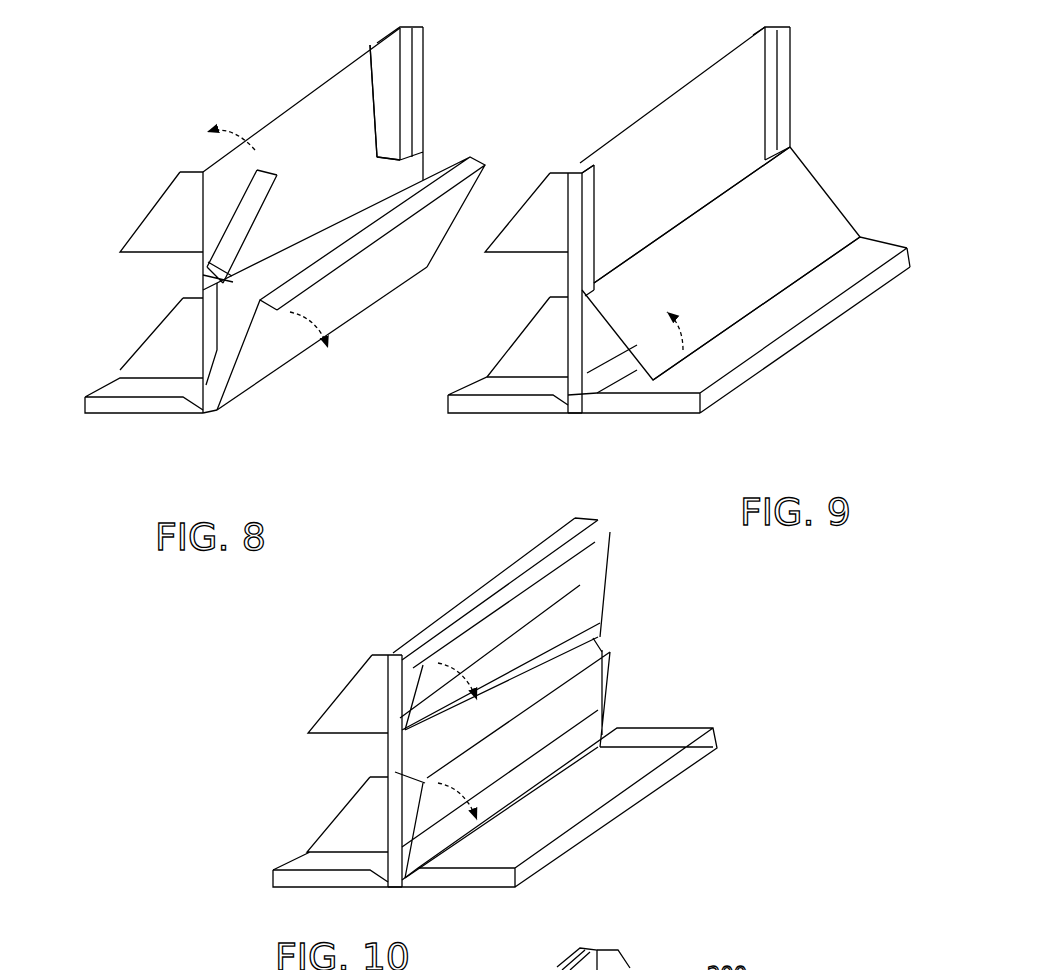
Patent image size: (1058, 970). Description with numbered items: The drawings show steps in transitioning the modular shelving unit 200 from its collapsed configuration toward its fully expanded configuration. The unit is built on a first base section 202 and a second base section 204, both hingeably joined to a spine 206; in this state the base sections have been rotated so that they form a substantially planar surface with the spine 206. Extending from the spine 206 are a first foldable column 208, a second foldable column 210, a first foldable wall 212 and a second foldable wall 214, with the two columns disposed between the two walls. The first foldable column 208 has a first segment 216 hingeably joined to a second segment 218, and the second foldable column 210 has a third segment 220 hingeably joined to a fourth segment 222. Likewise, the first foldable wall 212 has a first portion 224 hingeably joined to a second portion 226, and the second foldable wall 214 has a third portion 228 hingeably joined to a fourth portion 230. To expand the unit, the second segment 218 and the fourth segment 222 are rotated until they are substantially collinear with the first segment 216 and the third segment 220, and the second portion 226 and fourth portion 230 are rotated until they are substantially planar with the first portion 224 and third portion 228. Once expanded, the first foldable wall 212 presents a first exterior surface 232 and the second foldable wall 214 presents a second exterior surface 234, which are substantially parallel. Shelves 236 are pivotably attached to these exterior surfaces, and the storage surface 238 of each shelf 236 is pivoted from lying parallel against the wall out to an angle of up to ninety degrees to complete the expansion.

In FIG. 8, the modular shelving unit 200 is at (285, 240).
In FIG. 9, the modular shelving unit 200 is at (686, 240).
In FIG. 10, the modular shelving unit 200 is at (441, 728).
In FIG. 8, the first base section 202 is at (255, 347).
In FIG. 9, the first base section 202 is at (805, 343).
In FIG. 10, the first base section 202 is at (550, 863).
In FIG. 8, the second base section 204 is at (153, 412).
In FIG. 9, the second base section 204 is at (498, 415).
In FIG. 10, the second base section 204 is at (290, 890).
In FIG. 8, the spine 206 is at (207, 415).
In FIG. 9, the spine 206 is at (573, 413).
In FIG. 10, the spine 206 is at (395, 888).
In FIG. 8, the first foldable column 208 is at (198, 282).
In FIG. 9, the first foldable column 208 is at (558, 272).
In FIG. 10, the first foldable column 208 is at (378, 762).
In FIG. 8, the second foldable column 210 is at (436, 93).
In FIG. 9, the second foldable column 210 is at (823, 80).
In FIG. 9, the first foldable wall 212 is at (756, 236).
In FIG. 9, the second foldable wall 214 is at (650, 105).
In FIG. 8, the first segment 216 is at (215, 347).
In FIG. 9, the first segment 216 is at (573, 347).
In FIG. 8, the second segment 218 is at (277, 173).
In FIG. 9, the second segment 218 is at (588, 210).
In FIG. 8, the third segment 220 is at (368, 40).
In FIG. 8, the fourth segment 222 is at (415, 65).
In FIG. 9, the fourth segment 222 is at (783, 107).
In FIG. 9, the first portion 224 is at (610, 373).
In FIG. 8, the second portion 226 is at (322, 238).
In FIG. 9, the second portion 226 is at (792, 208).
In FIG. 9, the third portion 228 is at (570, 393).
In FIG. 8, the fourth portion 230 is at (335, 118).
In FIG. 9, the fourth portion 230 is at (708, 100).
In FIG. 10, the first exterior surface 232 is at (532, 660).
In FIG. 10, the second exterior surface 234 is at (437, 597).
In FIG. 8, the shelf 236 is at (180, 200).
In FIG. 10, the shelf 236 is at (370, 690).
In FIG. 10, the storage surface 238 is at (580, 587).